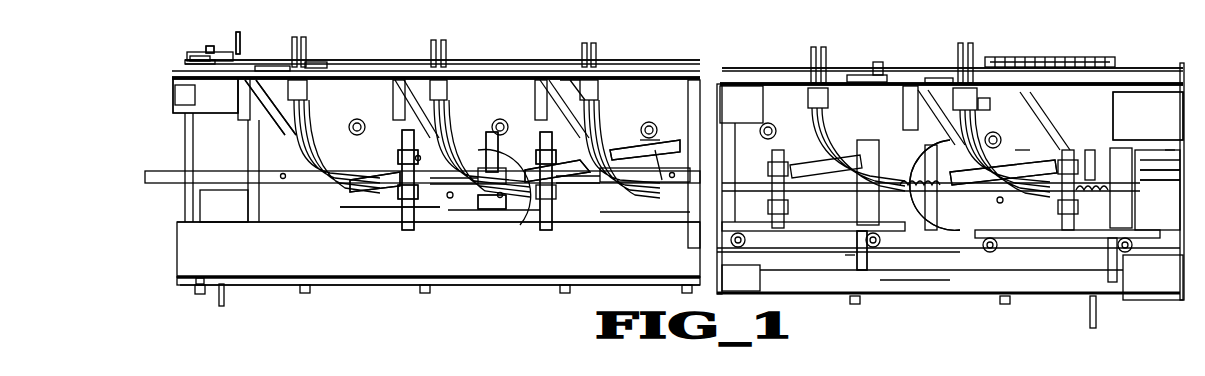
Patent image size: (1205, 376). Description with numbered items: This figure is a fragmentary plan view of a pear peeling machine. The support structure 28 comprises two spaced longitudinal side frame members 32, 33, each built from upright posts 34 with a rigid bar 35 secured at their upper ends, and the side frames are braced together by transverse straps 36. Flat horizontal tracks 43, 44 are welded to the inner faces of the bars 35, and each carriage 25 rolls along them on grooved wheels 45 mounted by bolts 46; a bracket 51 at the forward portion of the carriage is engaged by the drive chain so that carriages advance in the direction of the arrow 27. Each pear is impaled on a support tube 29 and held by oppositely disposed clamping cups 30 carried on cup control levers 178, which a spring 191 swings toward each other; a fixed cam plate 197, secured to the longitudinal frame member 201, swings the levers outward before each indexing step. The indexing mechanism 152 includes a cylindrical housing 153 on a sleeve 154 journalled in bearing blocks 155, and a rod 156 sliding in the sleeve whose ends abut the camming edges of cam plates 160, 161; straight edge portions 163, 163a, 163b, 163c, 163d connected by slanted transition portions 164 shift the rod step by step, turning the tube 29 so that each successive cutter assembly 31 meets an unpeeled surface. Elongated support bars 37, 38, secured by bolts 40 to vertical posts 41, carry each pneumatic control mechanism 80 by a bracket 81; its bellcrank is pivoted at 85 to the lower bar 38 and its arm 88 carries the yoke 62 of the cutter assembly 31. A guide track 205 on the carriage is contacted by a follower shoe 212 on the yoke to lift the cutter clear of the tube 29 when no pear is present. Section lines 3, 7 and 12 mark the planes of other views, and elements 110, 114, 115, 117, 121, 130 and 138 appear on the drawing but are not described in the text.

The section line 3 is at (1195, 190).
The section line 7 is at (958, 317).
The section line 12 is at (253, 350).
The carriage 25 is at (345, 198).
The arrow 27 is at (157, 153).
The support structure 28 is at (1045, 305).
The support tube 29 is at (660, 152).
The clamping cups 30 is at (378, 172).
The cutter assembly 31 is at (402, 230).
The side frame member 32 is at (177, 280).
The side frame member 33 is at (170, 78).
The upright posts 34 is at (238, 36).
The rigid bar 35 is at (700, 80).
The transverse straps 36 is at (248, 203).
The upper support bar 37 is at (490, 66).
The lower support bar 38 is at (544, 70).
The bolts 40 is at (208, 48).
The vertical posts 41 is at (195, 56).
The track 43 is at (915, 266).
The track 44 is at (205, 95).
The grooved wheels 45 is at (354, 120).
The bolts 46 is at (740, 192).
The bracket 51 is at (905, 238).
The yoke 62 is at (400, 156).
The pneumatic control mechanism 80 is at (428, 44).
The bracket 81 is at (463, 68).
The pivot 85 is at (245, 122).
The bellcrank arm 88 is at (285, 125).
The hose 110 is at (307, 128).
The fitting 114 is at (312, 66).
The tube 115 is at (446, 50).
The strut 117 is at (295, 150).
The bracket 121 is at (286, 66).
The tube 130 is at (572, 66).
The hose clamp 138 is at (283, 22).
The indexing mechanism 152 is at (1160, 166).
The cylindrical housing 153 is at (1160, 180).
The sleeve 154 is at (495, 215).
The bearing blocks 155 is at (480, 168).
The rod 156 is at (500, 120).
The cam plate 160 is at (175, 83).
The cam plate 161 is at (182, 240).
The camming edge portion 163 is at (185, 88).
The camming edge portion 163a is at (650, 100).
The camming edge portion 163b is at (850, 260).
The camming edge portion 163c is at (1020, 150).
The camming edge portion 163d is at (1182, 150).
The transition portions 164 is at (578, 70).
The cup control lever 178 is at (657, 150).
The spring 191 is at (450, 215).
The fixed cam plate 197 is at (975, 212).
The longitudinal frame member 201 is at (150, 177).
The guide track 205 is at (385, 224).
The follower shoe 212 is at (398, 232).